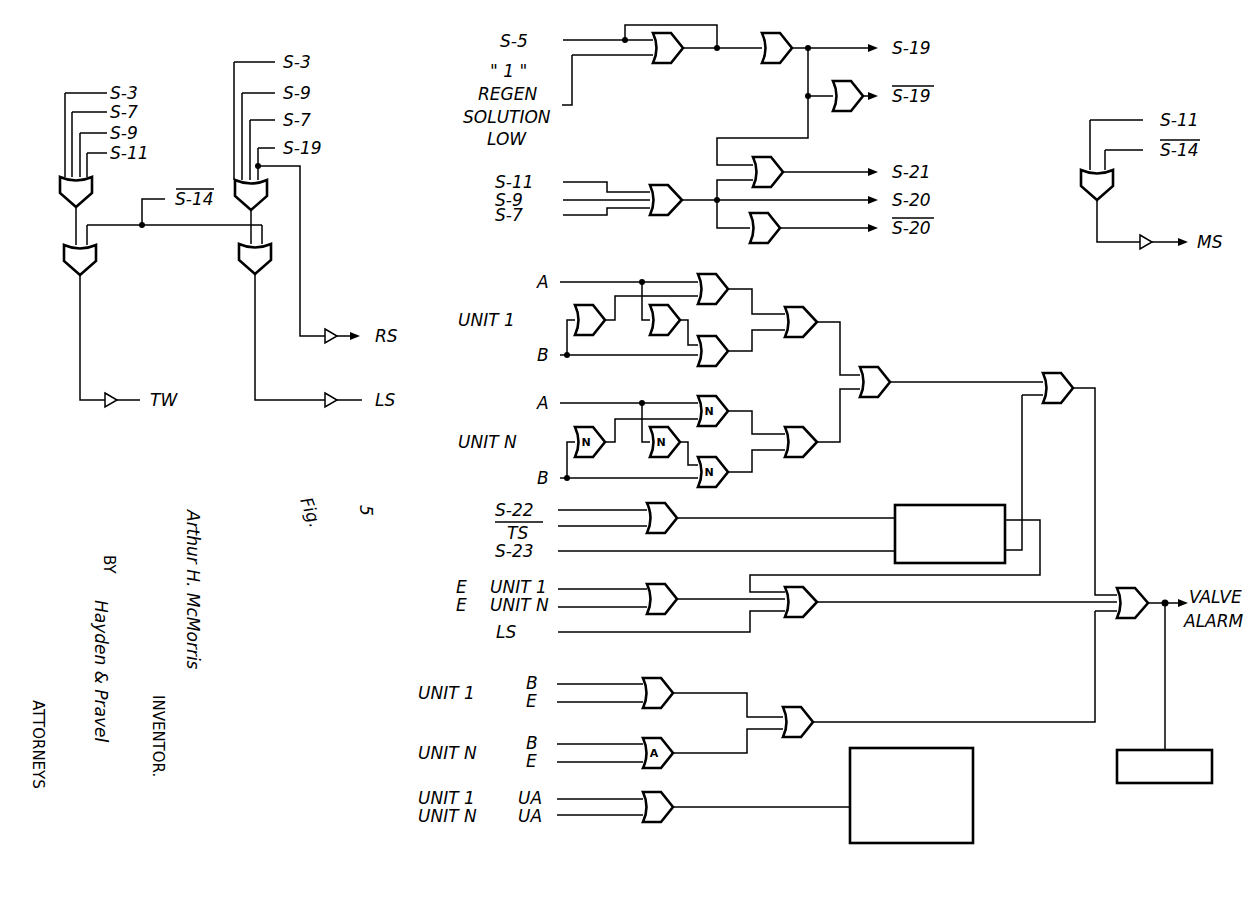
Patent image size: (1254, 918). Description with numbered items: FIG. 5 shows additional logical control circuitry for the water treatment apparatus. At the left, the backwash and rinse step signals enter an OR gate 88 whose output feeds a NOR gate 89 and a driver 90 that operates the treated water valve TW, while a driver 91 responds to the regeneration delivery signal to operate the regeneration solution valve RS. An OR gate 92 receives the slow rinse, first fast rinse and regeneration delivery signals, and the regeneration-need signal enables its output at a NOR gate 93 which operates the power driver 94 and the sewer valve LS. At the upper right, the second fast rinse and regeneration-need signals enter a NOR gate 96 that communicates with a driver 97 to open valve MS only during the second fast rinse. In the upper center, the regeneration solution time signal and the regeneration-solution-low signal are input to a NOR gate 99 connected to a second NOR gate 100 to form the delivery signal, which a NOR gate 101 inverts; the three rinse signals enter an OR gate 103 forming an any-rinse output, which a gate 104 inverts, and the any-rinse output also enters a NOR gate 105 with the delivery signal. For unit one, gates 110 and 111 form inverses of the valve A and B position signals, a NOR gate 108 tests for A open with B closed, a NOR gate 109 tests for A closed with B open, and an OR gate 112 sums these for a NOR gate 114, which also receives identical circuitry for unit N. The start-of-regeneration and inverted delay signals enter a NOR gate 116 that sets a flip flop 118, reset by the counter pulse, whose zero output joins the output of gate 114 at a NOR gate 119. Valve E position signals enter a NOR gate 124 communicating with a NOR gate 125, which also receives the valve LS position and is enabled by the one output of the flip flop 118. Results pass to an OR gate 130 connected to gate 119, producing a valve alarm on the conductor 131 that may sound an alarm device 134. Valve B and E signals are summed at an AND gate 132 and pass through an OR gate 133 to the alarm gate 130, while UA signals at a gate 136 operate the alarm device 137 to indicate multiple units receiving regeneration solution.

The OR gate 88 is at (61, 184).
The NOR gate 89 is at (98, 258).
The driver 90 is at (112, 395).
The driver 91 is at (330, 328).
The OR gate 92 is at (266, 192).
The NOR gate 93 is at (245, 270).
The power driver 94 is at (335, 392).
The NOR gate 96 is at (1114, 179).
The driver 97 is at (1146, 252).
The NOR gate 99 is at (666, 64).
The second NOR gate 100 is at (766, 64).
The NOR gate 101 is at (842, 110).
The OR gate 103 is at (662, 185).
The gate 104 is at (780, 240).
The NOR gate 105 is at (780, 162).
The NOR gate 108 is at (712, 274).
The NOR gate 109 is at (720, 362).
The gate 110 is at (584, 304).
The gate 111 is at (654, 304).
The OR gate 112 is at (798, 306).
The NOR gate 114 is at (874, 366).
The NOR gate 116 is at (680, 526).
The flip flop 118 is at (951, 505).
The NOR gate 119 is at (1056, 373).
The NOR gate 124 is at (672, 589).
The NOR gate 125 is at (814, 610).
The OR gate 130 is at (1121, 586).
The conductor 131 is at (1165, 599).
The AND gate 132 is at (670, 682).
The OR gate 133 is at (810, 710).
The alarm device 134 is at (1185, 750).
The gate 136 is at (680, 798).
The alarm device 137 is at (973, 795).